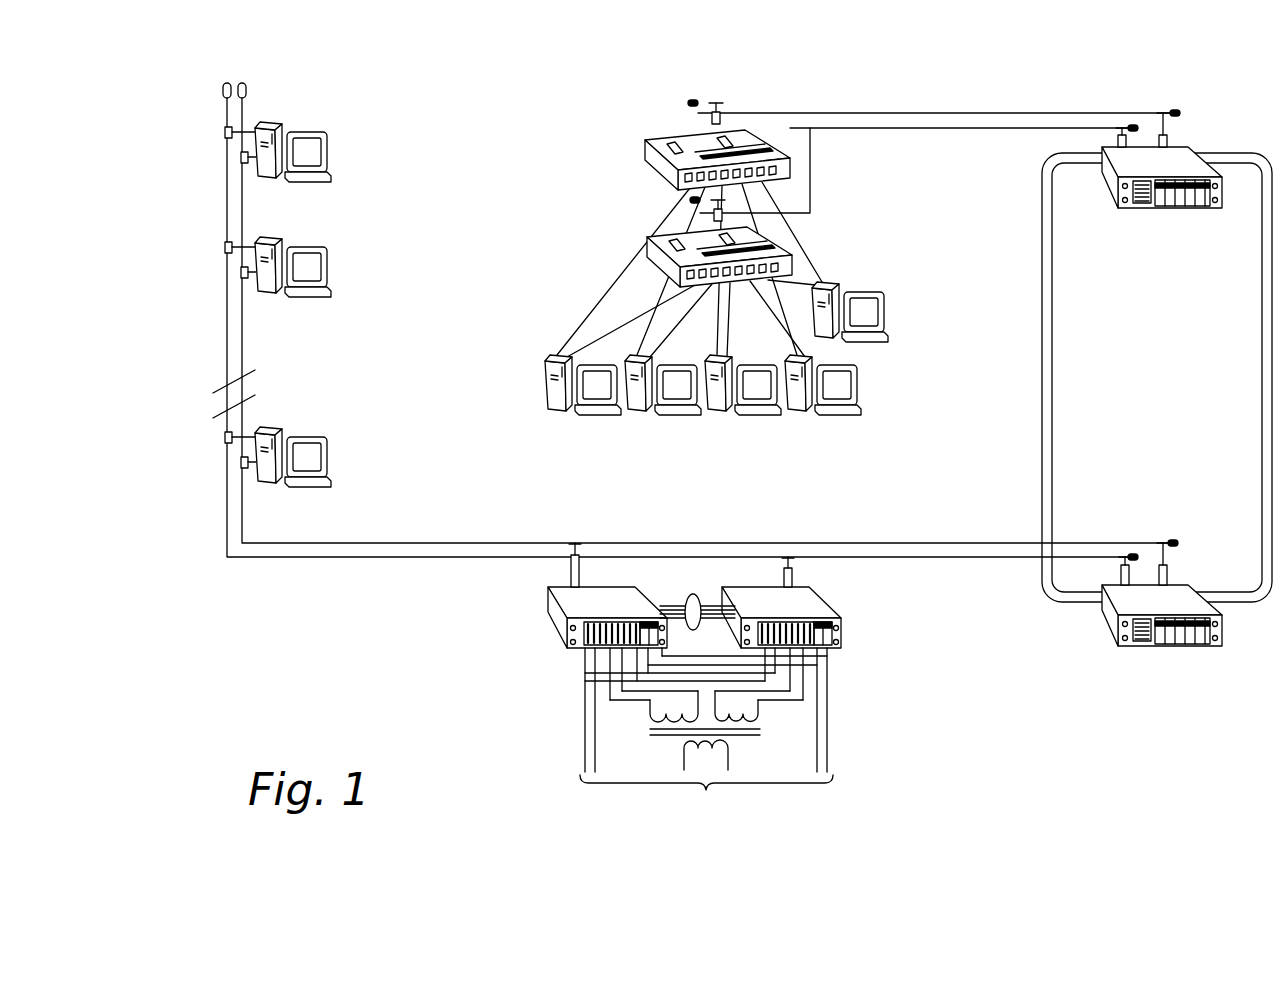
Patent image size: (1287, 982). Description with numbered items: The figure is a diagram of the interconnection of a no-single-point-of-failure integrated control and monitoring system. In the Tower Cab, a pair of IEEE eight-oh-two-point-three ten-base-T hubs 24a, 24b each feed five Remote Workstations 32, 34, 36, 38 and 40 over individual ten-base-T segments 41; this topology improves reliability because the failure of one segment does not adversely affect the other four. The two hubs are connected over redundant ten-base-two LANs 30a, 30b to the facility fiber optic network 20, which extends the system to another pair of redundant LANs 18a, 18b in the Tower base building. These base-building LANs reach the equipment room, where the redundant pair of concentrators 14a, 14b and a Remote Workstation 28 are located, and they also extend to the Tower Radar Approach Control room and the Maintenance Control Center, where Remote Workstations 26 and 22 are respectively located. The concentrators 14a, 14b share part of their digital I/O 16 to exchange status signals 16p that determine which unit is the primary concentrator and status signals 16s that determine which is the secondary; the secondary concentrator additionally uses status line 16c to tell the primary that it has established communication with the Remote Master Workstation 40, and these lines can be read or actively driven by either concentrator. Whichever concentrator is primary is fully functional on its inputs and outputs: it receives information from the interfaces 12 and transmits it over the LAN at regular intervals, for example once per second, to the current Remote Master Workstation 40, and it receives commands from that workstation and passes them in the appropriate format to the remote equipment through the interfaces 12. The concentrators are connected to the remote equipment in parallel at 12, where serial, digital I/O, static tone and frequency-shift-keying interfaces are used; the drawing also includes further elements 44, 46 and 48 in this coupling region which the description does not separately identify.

The interfaces 12 is at (713, 748).
The concentrator 14a is at (548, 620).
The concentrator 14b is at (848, 612).
The digital I/O 16 is at (694, 594).
The status signals 16s is at (668, 600).
The status line 16c is at (640, 652).
The status signals 16p is at (782, 652).
The IEEE 802.3 LAN 18a is at (384, 560).
The IEEE 802.3 LAN 18b is at (409, 543).
The facility fiber optic network 20 is at (1052, 385).
The Remote Workstation 22 is at (328, 124).
The 10baseT hub 24a is at (650, 140).
The 10baseT hub 24b is at (650, 235).
The Remote Workstation 26 is at (330, 238).
The Remote Workstation 28 is at (320, 435).
The 10base2 LAN 30a is at (930, 110).
The 10base2 LAN 30b is at (914, 130).
The Remote Workstation 32 is at (585, 420).
The Remote Workstation 34 is at (662, 420).
The Remote Workstation 36 is at (760, 420).
The Remote Workstation 38 is at (858, 398).
The Remote Master Workstation 40 is at (885, 338).
The 10baseT segments 41 is at (650, 312).
The power line 44 is at (833, 745).
The secondary winding 46 is at (740, 742).
The power line 48 is at (602, 738).